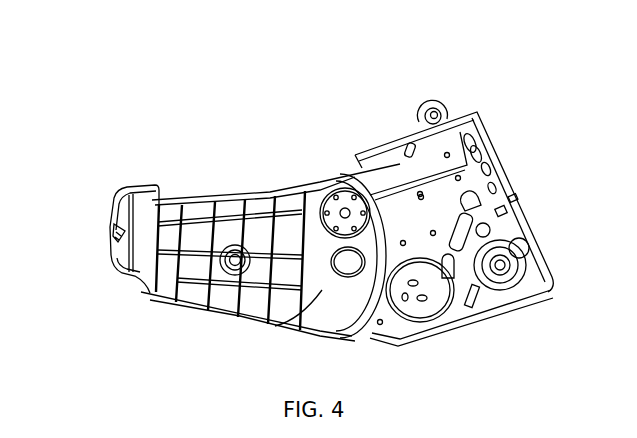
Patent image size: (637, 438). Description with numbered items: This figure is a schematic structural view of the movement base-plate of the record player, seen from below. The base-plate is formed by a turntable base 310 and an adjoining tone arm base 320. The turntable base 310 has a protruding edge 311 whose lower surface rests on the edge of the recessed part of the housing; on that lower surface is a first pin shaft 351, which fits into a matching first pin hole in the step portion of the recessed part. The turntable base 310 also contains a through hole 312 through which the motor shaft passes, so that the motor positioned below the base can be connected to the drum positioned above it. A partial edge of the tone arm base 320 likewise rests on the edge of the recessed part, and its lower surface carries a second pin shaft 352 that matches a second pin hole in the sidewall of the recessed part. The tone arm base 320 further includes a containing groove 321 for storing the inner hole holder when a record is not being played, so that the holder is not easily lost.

The turntable base 310 is at (233, 193).
The protruding edge 311 is at (115, 260).
The through hole 312 is at (318, 178).
The tone arm base 320 is at (398, 136).
The containing groove 321 is at (447, 324).
The first pin shaft 351 is at (112, 227).
The second pin shaft 352 is at (514, 183).